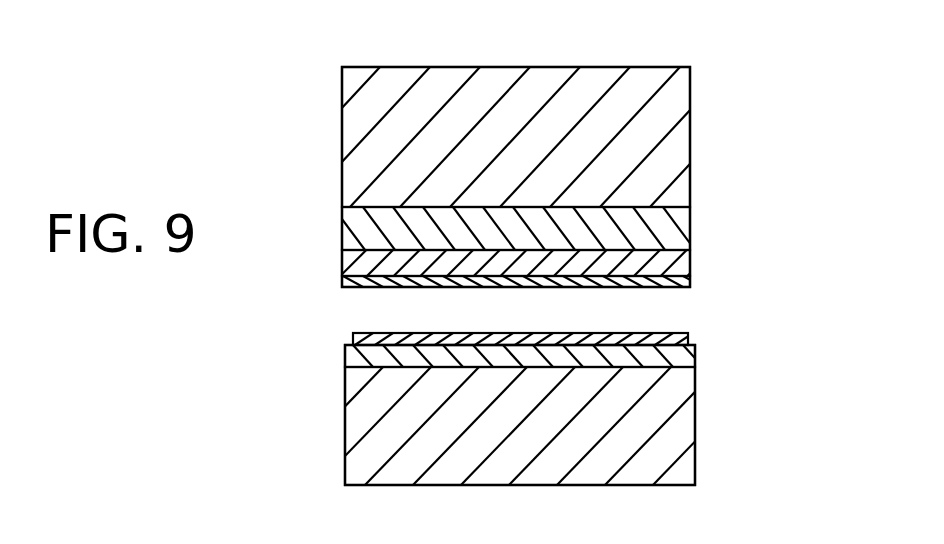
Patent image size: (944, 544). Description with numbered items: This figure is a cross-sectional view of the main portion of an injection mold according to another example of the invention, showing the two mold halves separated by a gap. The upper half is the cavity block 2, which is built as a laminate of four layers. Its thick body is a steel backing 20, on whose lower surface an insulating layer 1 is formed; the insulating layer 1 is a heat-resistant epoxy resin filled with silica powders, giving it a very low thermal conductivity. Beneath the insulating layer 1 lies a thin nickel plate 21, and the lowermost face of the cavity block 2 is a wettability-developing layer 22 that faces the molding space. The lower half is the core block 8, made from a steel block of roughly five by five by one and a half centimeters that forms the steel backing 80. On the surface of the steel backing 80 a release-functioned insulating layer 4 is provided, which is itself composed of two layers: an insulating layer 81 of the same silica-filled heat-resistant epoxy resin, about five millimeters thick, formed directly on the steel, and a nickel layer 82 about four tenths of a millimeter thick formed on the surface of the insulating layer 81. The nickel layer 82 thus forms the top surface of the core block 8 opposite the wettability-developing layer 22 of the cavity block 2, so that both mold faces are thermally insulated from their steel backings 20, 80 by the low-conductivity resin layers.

The cavity block 2 is at (700, 74).
The steel backing 20 is at (675, 135).
The insulating layer 1 is at (672, 225).
The nickel plate 21 is at (660, 260).
The wettability-developing layer 22 is at (680, 283).
The core block 8 is at (705, 468).
The steel backing 80 is at (660, 418).
The insulating layer 81 is at (678, 358).
The nickel layer 82 is at (677, 340).
The release-functioned insulating layer 4 is at (600, 363).